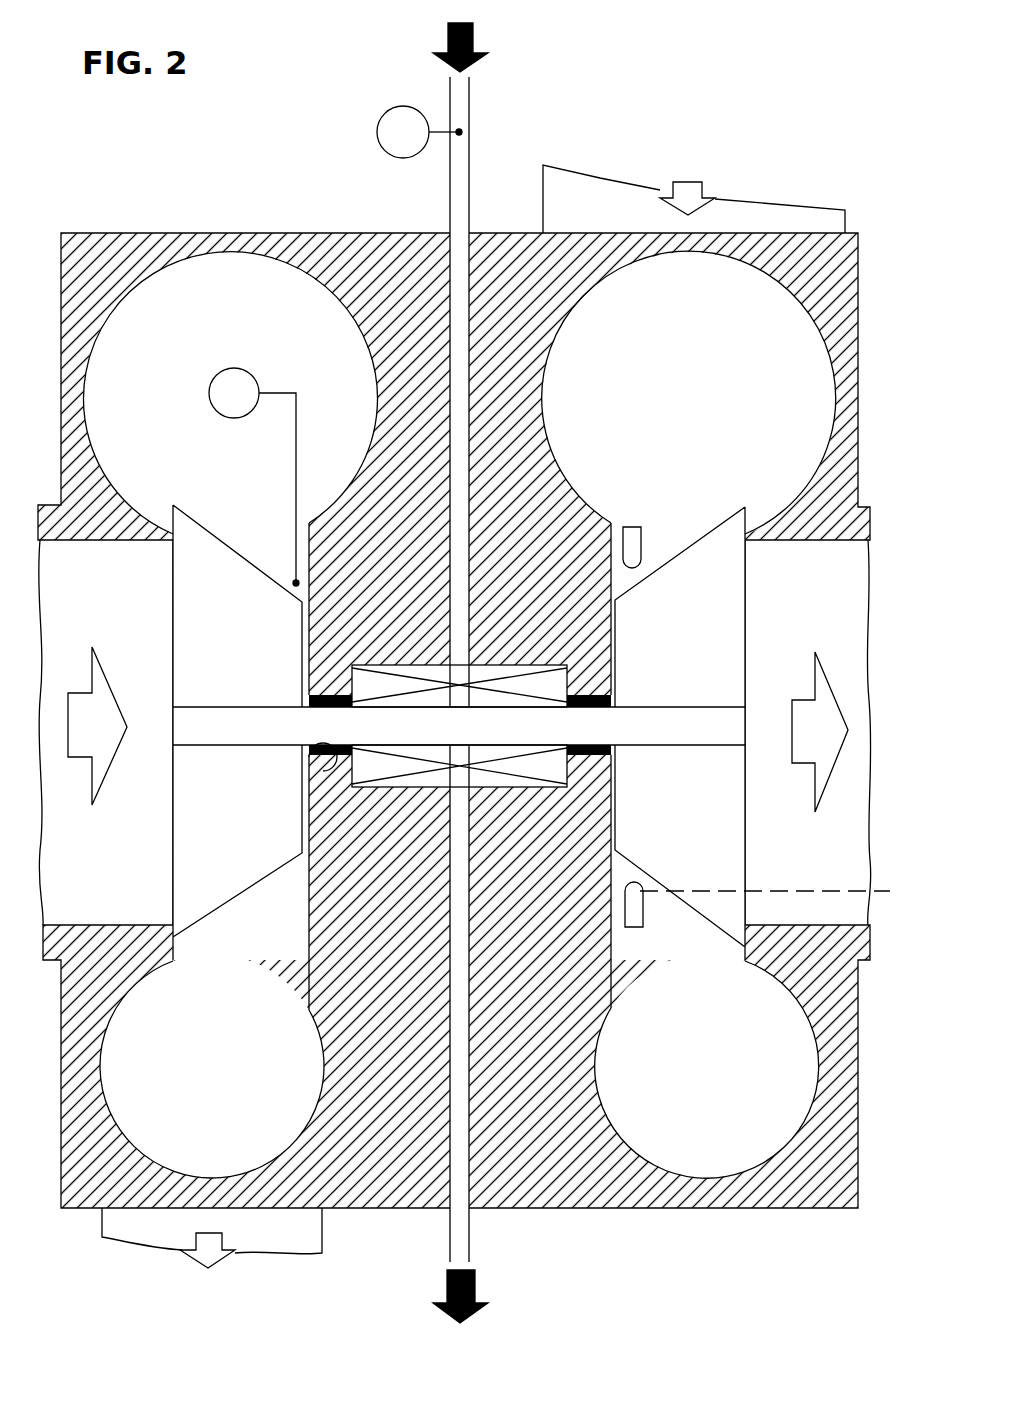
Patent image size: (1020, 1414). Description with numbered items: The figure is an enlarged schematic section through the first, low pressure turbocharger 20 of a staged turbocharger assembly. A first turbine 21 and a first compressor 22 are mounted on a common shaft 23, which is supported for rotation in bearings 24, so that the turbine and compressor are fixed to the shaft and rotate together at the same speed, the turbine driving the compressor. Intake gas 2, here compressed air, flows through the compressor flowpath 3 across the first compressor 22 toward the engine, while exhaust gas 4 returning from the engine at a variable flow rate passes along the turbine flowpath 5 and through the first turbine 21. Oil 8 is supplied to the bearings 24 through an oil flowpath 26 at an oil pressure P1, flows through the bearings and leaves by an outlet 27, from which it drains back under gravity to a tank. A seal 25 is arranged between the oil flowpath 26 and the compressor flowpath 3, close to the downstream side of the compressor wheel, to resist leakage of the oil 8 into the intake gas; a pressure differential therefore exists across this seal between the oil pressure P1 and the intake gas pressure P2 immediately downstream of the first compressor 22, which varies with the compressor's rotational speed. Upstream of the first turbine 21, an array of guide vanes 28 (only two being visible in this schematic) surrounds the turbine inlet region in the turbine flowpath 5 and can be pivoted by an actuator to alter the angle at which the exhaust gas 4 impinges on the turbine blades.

The first, low pressure turbocharger 20 is at (235, 195).
The compressor flowpath 3 is at (113, 598).
The turbine flowpath 5 is at (597, 226).
The intake gas 2 is at (151, 967).
The exhaust gas 4 is at (754, 486).
The first compressor 22 is at (173, 635).
The first turbine 21 is at (745, 627).
The shaft 23 is at (668, 745).
The bearings 24 is at (566, 684).
The seal 25 is at (312, 780).
The guide vanes 28 is at (641, 544).
The oil flowpath 26 is at (469, 172).
The outlet 27 is at (470, 1235).
The oil 8 is at (474, 30).
The oil pressure P1 is at (419, 132).
The intake gas pressure at the seal P2 is at (254, 477).